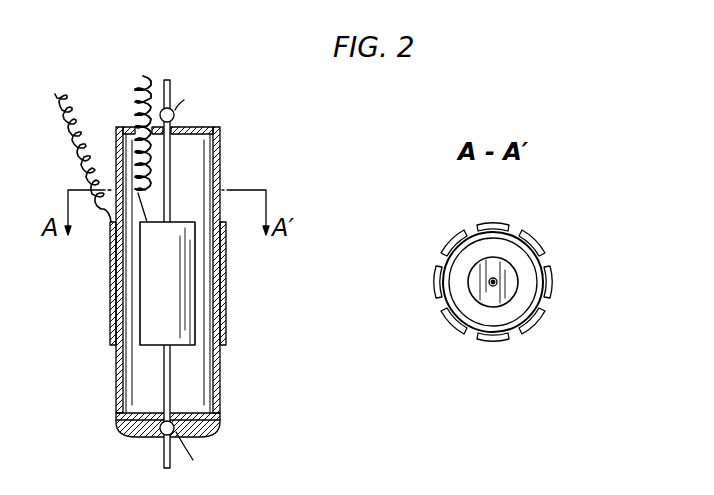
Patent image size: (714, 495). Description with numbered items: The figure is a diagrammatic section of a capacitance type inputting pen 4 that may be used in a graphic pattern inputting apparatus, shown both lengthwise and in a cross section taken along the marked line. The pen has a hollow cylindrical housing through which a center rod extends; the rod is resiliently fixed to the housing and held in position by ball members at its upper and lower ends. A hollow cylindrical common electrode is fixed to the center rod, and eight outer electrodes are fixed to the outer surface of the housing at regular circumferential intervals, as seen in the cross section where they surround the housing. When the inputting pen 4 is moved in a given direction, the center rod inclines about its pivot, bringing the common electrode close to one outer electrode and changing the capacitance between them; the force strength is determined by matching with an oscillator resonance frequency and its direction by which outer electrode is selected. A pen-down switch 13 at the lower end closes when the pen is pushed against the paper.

The inputting pen 4 is at (203, 110).
The pen-down switch 13 is at (146, 432).